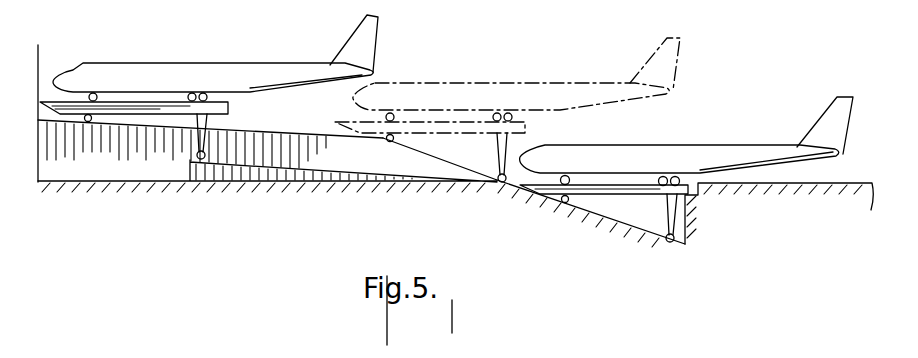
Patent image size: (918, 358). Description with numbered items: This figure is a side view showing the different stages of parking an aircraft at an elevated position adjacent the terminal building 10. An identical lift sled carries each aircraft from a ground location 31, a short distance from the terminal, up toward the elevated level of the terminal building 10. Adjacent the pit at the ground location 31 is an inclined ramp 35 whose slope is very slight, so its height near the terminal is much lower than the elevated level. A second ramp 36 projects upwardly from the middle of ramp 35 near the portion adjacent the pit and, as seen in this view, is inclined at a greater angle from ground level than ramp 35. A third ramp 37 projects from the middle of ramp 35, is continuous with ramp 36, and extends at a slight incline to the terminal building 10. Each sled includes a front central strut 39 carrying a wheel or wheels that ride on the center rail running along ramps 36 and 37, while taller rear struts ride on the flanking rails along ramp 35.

The terminal building 10 is at (43, 63).
The ground location 31 is at (584, 236).
The inclined ramp 35 is at (308, 181).
The second ramp 36 is at (466, 157).
The third ramp 37 is at (290, 135).
The front central strut 39 is at (553, 201).